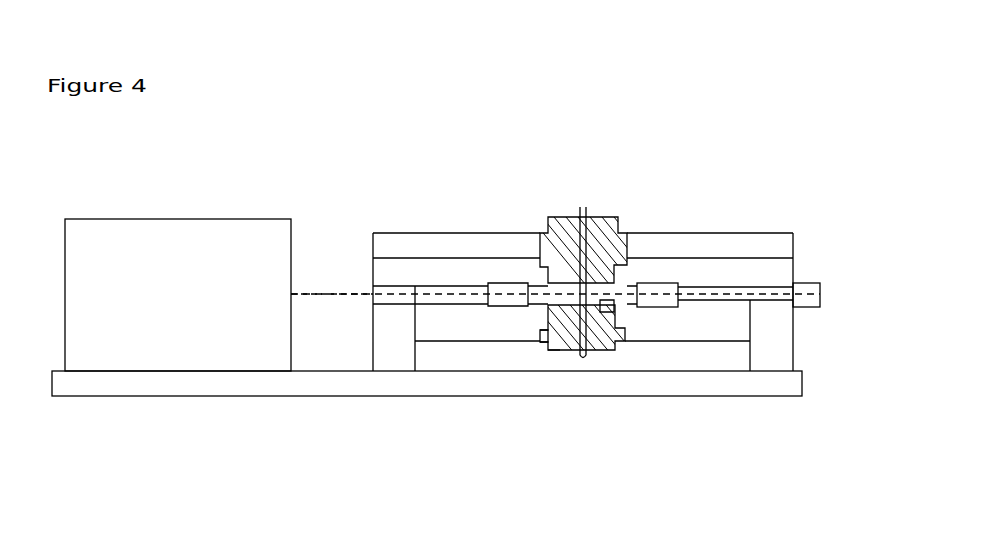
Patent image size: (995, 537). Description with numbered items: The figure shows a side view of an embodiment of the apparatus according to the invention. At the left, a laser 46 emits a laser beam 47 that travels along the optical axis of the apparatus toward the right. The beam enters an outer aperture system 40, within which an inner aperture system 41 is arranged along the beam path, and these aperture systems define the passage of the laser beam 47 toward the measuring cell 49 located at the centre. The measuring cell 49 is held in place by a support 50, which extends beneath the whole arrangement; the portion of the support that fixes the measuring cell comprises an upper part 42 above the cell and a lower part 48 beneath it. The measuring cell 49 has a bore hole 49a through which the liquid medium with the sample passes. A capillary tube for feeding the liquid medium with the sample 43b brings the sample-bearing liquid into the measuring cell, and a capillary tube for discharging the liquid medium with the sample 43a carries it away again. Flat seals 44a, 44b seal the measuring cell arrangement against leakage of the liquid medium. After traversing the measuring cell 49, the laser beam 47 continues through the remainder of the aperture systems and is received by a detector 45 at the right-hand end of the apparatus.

The outer aperture system 40 is at (465, 233).
The inner aperture system 41 is at (527, 283).
The upper part of the portion of the support for fixing the measuring cell 42 is at (562, 236).
The capillary tube for discharging the liquid medium with the sample 43a is at (583, 210).
The capillary tube for feeding the liquid medium with the sample 43b is at (605, 352).
The flat seal 44a is at (620, 283).
The flat seal 44b is at (605, 312).
The detector 45 is at (813, 282).
The laser 46 is at (236, 240).
The laser beam 47 is at (355, 293).
The lower part of the portion of the support for fixing the measuring cell 48 is at (545, 355).
The measuring cell 49 is at (550, 298).
The bore hole 49a is at (540, 335).
The support 50 is at (240, 383).